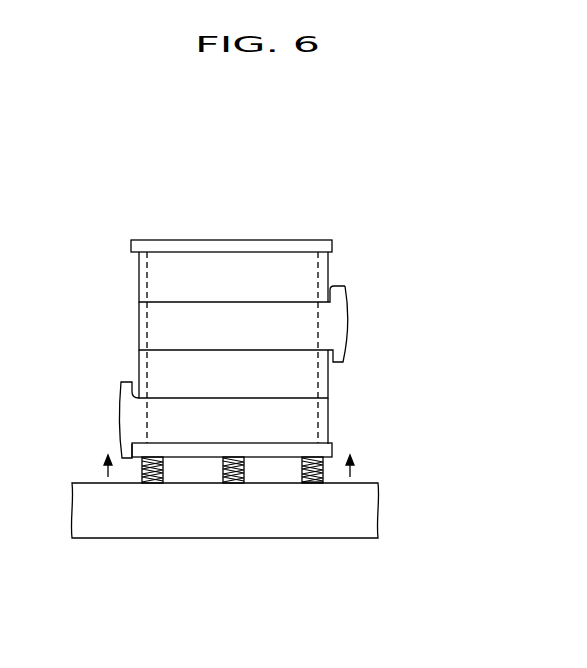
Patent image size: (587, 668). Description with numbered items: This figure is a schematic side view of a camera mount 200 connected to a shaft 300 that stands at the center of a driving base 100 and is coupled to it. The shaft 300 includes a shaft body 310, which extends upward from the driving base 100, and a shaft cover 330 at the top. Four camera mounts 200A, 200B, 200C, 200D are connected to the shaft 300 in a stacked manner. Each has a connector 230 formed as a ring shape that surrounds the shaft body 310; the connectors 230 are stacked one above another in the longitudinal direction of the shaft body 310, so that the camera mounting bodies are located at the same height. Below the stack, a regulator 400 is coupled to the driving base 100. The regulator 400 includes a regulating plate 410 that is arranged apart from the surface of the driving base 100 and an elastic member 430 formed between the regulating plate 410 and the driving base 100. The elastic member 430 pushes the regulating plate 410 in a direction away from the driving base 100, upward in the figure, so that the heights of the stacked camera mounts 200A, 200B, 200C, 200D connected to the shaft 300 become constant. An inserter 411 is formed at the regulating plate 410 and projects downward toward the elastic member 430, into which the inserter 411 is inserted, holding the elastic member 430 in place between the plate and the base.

The driving base 100 is at (370, 510).
The camera mount 200 is at (319, 345).
The camera mount 200A is at (336, 266).
The camera mount 200B is at (356, 320).
The camera mount 200C is at (337, 377).
The camera mount 200D is at (338, 418).
The connector 230 is at (165, 407).
The shaft 300 is at (231, 288).
The shaft body 310 is at (318, 283).
The shaft cover 330 is at (227, 245).
The regulator 400 is at (250, 539).
The regulating plate 410 is at (199, 450).
The inserter 411 is at (335, 533).
The elastic member 430 is at (293, 483).